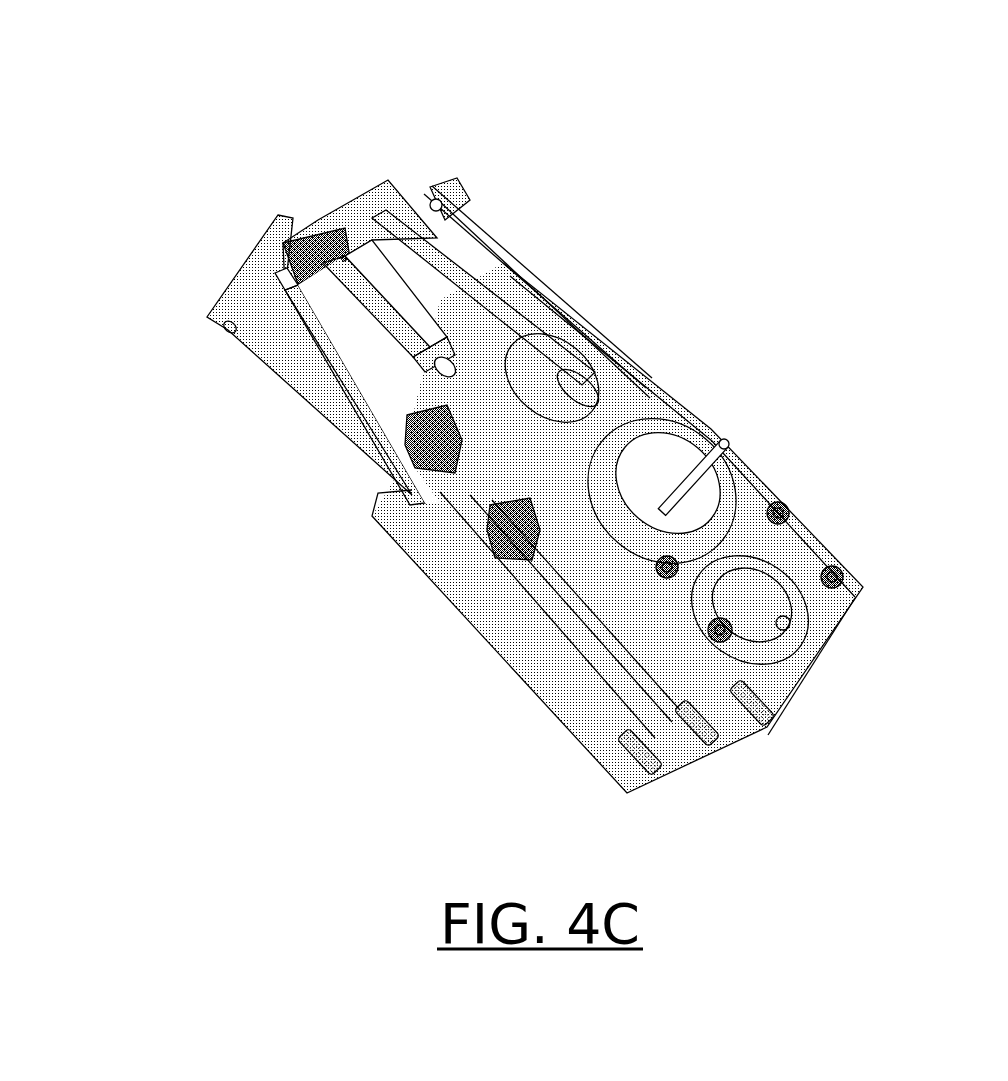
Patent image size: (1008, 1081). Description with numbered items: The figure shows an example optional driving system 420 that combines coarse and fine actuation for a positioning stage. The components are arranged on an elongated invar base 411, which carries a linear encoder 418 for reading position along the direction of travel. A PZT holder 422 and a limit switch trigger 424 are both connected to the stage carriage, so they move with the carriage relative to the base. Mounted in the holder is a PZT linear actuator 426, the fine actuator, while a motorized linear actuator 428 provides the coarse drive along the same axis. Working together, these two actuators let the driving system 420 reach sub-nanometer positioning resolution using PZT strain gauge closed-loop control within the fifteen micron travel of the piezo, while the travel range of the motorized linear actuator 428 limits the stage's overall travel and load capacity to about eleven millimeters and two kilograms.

The driving system 420 is at (495, 31).
The invar base 411 is at (668, 397).
The linear encoder 418 is at (457, 262).
The PZT holder 422 is at (357, 190).
The limit switch trigger 424 is at (298, 367).
The PZT linear actuator 426 is at (385, 318).
The motorized linear actuator 428 is at (577, 566).